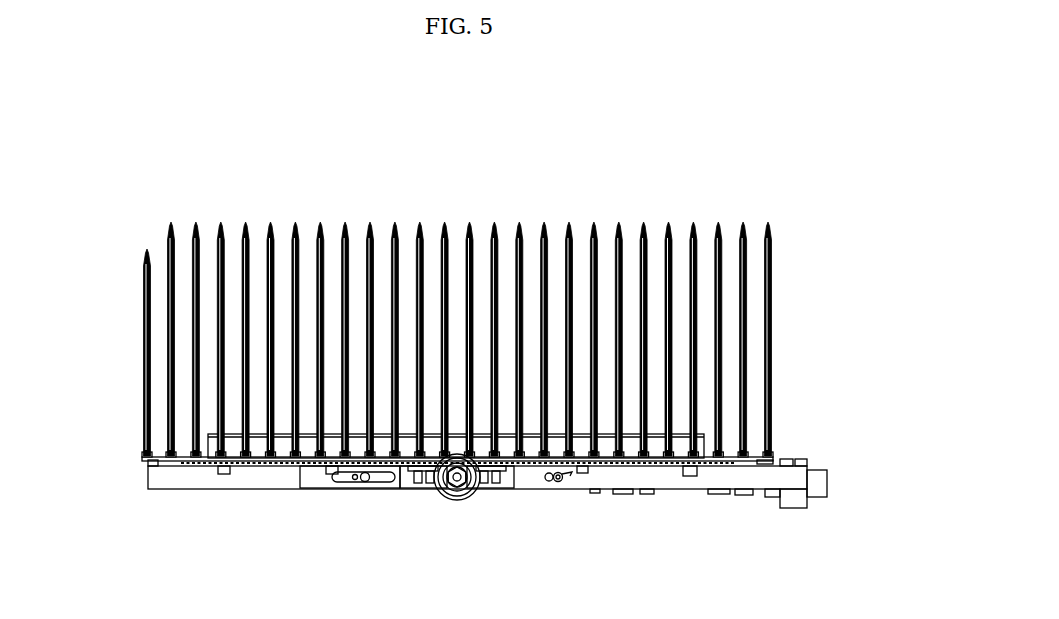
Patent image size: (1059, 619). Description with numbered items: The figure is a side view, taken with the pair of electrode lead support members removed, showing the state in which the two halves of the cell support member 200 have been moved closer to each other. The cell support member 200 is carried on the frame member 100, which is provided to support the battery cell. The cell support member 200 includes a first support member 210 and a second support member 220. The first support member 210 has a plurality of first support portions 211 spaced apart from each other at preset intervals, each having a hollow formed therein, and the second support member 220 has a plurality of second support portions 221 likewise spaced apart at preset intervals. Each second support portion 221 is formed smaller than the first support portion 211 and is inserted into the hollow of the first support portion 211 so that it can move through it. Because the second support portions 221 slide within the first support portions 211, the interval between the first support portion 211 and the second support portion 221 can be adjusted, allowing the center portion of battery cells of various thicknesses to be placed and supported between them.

The frame member 100 is at (205, 498).
The cell support member 200 is at (172, 118).
The first support member 210 is at (184, 178).
The first support portion 211 is at (171, 222).
The second support member 220 is at (124, 196).
The second support portion 221 is at (147, 254).